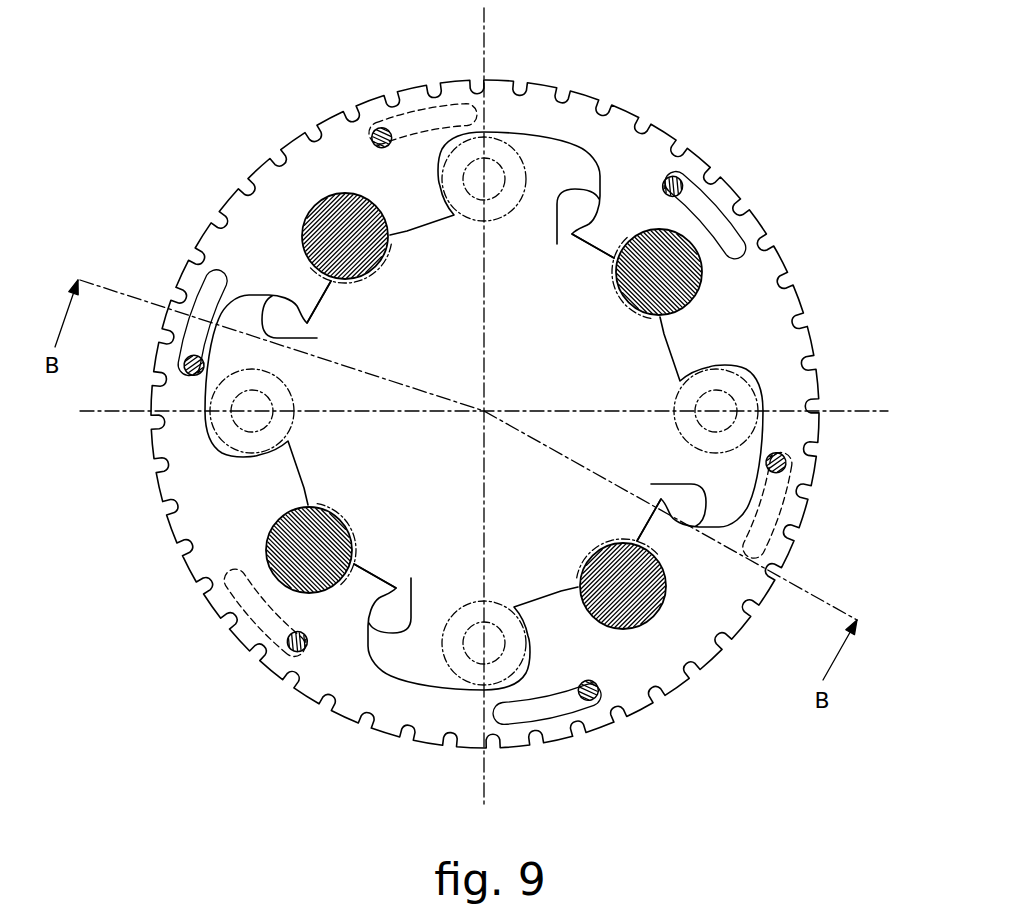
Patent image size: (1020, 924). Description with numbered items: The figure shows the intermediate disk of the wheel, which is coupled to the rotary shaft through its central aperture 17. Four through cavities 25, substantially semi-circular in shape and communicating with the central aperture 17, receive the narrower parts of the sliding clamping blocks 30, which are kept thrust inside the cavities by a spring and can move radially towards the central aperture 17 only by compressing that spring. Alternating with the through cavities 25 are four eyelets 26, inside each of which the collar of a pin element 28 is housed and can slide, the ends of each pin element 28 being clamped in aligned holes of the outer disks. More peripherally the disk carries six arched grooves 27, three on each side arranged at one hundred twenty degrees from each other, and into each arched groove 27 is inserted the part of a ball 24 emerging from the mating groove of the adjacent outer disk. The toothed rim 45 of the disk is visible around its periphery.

The central aperture 17 is at (320, 462).
The ball 24 is at (375, 128).
The through cavity 25 is at (412, 257).
The eyelet 26 is at (573, 245).
The arched groove 27 is at (432, 122).
The pin element 28 is at (510, 218).
The sliding clamping block 30 is at (365, 277).
The sprocket 45 is at (240, 212).